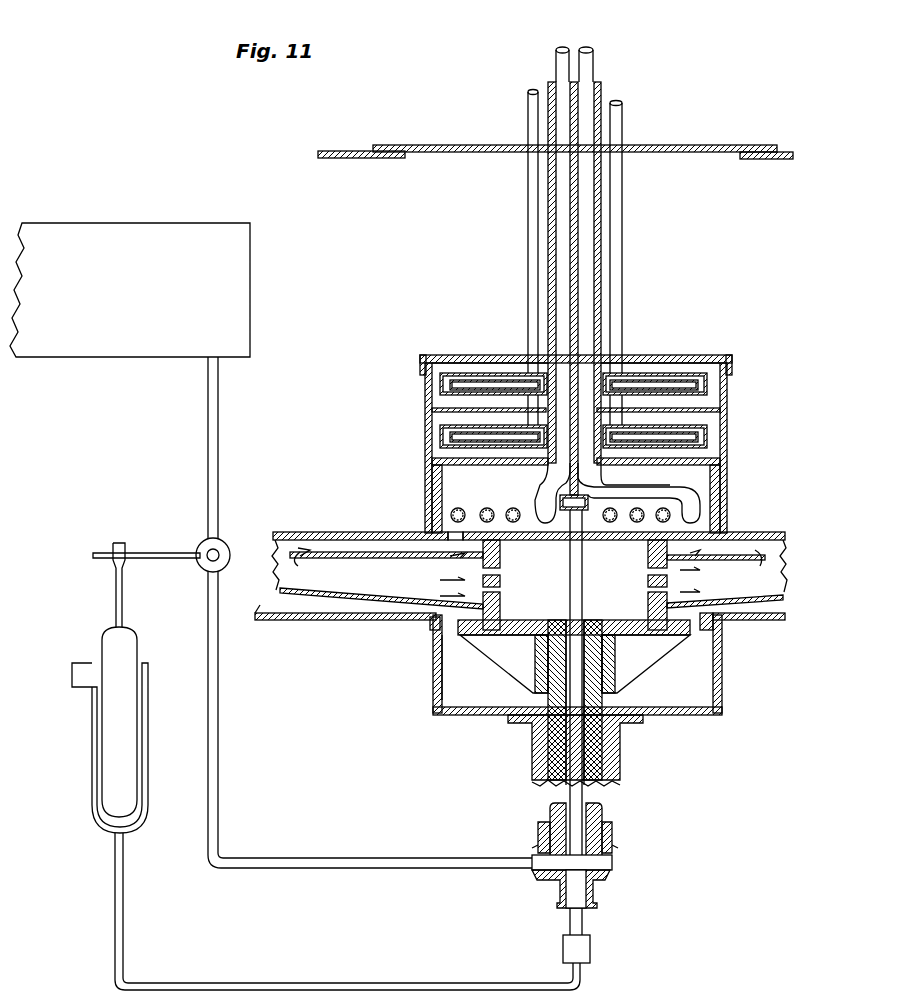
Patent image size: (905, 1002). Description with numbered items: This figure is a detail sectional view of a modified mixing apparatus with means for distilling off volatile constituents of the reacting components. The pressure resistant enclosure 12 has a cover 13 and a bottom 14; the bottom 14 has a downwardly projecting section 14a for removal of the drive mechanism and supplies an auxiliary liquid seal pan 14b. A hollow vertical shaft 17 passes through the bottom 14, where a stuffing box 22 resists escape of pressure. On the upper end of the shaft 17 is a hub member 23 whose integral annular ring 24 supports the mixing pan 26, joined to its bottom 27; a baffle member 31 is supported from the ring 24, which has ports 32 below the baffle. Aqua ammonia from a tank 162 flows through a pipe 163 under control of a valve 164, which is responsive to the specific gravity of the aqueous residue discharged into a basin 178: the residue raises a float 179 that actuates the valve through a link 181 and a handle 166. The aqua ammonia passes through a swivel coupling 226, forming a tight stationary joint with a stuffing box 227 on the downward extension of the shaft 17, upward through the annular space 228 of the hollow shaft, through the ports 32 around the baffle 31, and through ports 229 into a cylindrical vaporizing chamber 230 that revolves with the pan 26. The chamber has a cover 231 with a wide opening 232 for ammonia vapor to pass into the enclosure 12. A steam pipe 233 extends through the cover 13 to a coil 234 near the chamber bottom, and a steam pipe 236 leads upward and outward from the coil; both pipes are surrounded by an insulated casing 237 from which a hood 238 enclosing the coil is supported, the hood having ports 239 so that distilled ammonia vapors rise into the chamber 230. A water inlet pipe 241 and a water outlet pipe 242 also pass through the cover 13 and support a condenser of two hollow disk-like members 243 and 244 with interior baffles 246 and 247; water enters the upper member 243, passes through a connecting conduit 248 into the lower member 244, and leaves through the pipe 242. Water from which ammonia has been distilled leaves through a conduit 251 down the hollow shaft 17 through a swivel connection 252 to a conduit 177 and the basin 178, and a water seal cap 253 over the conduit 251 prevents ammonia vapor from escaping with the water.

The pressure resistant enclosure 12 is at (282, 655).
The cover 13 is at (345, 150).
The bottom 14 is at (375, 620).
The downwardly projecting section 14a is at (435, 668).
The auxiliary liquid seal pan 14b is at (462, 716).
The vertical shaft 17 is at (602, 810).
The stuffing box 22 is at (620, 750).
The hub member 23 is at (648, 660).
The annular ring 24 is at (670, 580).
The mixing pan 26 is at (335, 530).
The bottom 27 is at (747, 530).
The baffle member 31 is at (355, 558).
The ports 32 is at (500, 590).
The tank 162 is at (140, 358).
The pipe 163 is at (208, 438).
The valve 164 is at (222, 542).
The handle 166 is at (170, 550).
The conduit 177 is at (250, 985).
The basin 178 is at (92, 768).
The float 179 is at (103, 645).
The link 181 is at (116, 597).
The swivel coupling 226 is at (612, 862).
The stuffing box 227 is at (612, 838).
The annular space 228 is at (590, 802).
The ports 229 is at (500, 548).
The cylindrical vaporizing chamber 230 is at (425, 476).
The cover 231 is at (422, 355).
The opening 232 is at (520, 355).
The steam pipe 233 is at (554, 58).
The coil 234 is at (487, 508).
The steam pipe 236 is at (595, 58).
The casing 237 is at (601, 88).
The hood 238 is at (440, 460).
The ports 239 is at (538, 472).
The water inlet pipe 241 is at (528, 104).
The water outlet pipe 242 is at (622, 110).
The hollow disk-like member 243 is at (440, 383).
The hollow disk-like member 244 is at (440, 435).
The interior baffle 246 is at (707, 383).
The interior baffle 247 is at (707, 440).
The conduit 248 is at (450, 408).
The conduit 251 is at (582, 580).
The swivel connection 252 is at (590, 947).
The water seal cap 253 is at (590, 508).